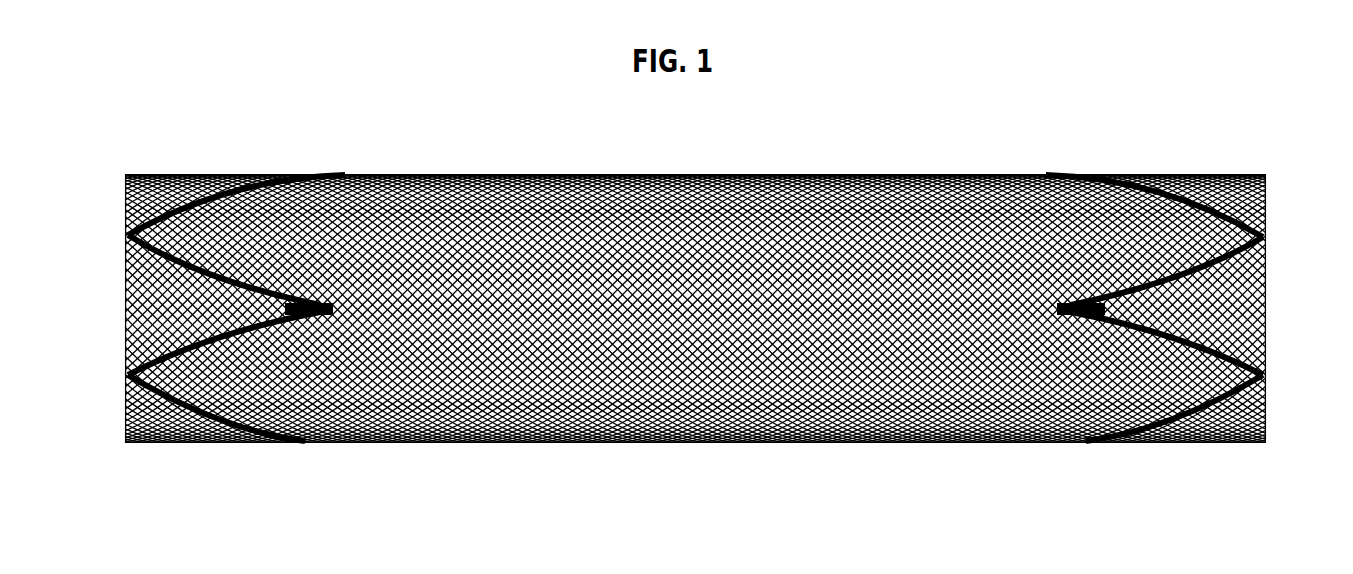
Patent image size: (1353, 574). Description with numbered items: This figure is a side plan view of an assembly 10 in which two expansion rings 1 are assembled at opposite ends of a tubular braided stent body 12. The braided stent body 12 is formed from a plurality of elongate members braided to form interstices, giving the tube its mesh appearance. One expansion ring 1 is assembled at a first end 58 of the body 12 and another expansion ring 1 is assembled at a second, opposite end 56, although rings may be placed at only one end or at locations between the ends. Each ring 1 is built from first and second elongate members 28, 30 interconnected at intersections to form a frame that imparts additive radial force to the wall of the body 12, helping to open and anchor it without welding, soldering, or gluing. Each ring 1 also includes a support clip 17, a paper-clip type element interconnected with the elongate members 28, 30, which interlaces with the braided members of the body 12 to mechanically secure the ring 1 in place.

The assembly 10 is at (443, 88).
The braided stent body 12 is at (847, 170).
The expansion ring 1 is at (292, 170).
The support clip 17 is at (302, 282).
The first elongate member 28 is at (207, 278).
The second elongate member 30 is at (205, 338).
The second end 56 is at (1266, 173).
The first end 58 is at (123, 173).